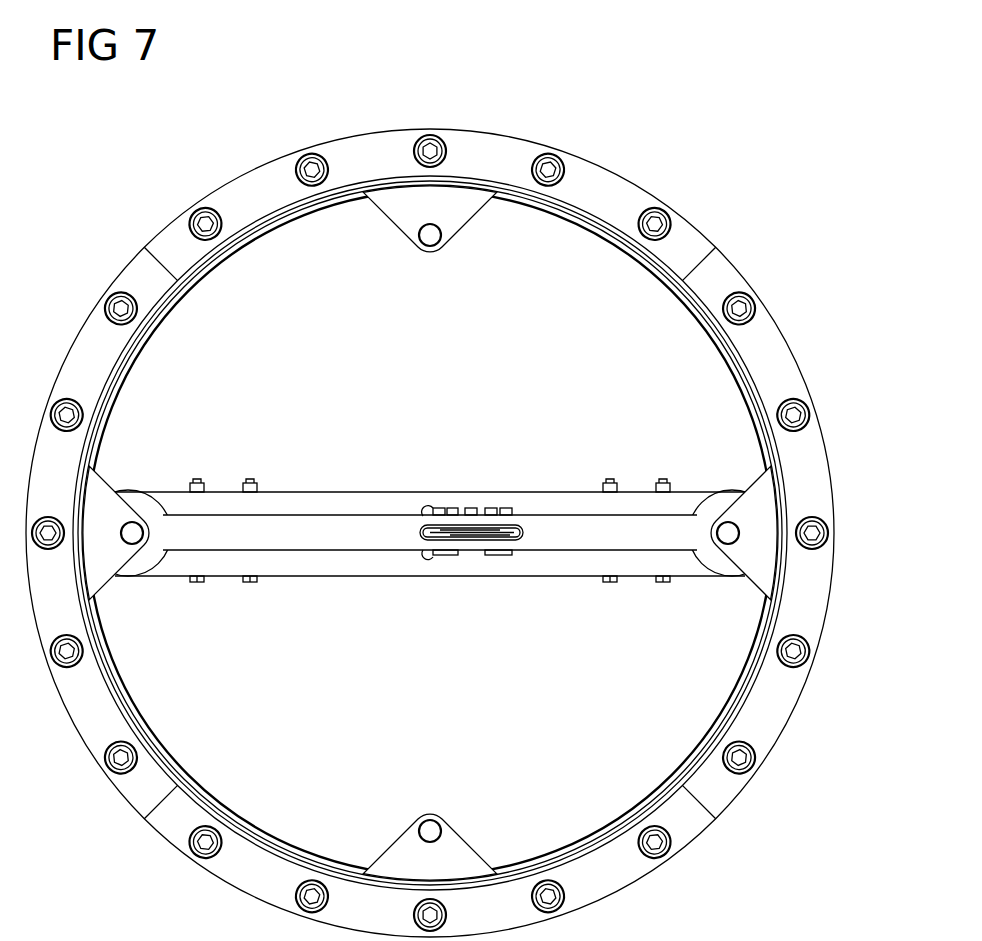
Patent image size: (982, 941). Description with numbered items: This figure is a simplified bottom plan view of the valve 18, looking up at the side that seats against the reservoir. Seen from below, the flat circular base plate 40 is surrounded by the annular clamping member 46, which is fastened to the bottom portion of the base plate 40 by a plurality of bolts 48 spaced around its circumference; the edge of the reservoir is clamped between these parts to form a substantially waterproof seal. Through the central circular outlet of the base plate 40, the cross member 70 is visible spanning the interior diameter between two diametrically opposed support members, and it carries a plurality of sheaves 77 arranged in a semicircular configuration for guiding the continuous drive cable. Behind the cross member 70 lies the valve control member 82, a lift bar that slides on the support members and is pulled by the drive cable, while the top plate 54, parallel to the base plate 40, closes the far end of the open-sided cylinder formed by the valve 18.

The valve 18 is at (148, 197).
The base plate 40 is at (462, 213).
The annular clamping member 46 is at (770, 347).
The bolts 48 is at (809, 412).
The top plate 54 is at (700, 675).
The cross member 70 is at (553, 530).
The sheaves 77 is at (476, 545).
The valve control member 82 is at (318, 565).